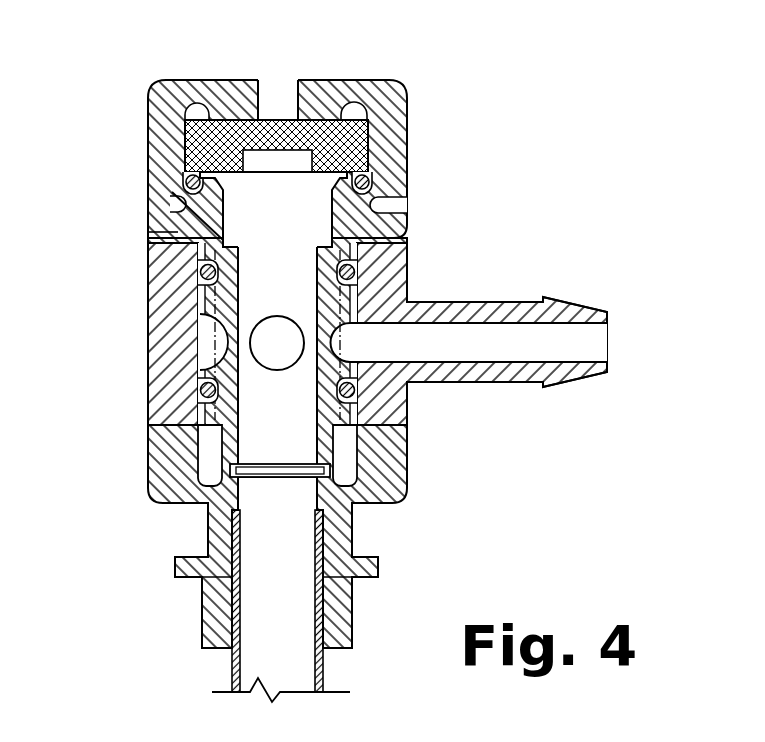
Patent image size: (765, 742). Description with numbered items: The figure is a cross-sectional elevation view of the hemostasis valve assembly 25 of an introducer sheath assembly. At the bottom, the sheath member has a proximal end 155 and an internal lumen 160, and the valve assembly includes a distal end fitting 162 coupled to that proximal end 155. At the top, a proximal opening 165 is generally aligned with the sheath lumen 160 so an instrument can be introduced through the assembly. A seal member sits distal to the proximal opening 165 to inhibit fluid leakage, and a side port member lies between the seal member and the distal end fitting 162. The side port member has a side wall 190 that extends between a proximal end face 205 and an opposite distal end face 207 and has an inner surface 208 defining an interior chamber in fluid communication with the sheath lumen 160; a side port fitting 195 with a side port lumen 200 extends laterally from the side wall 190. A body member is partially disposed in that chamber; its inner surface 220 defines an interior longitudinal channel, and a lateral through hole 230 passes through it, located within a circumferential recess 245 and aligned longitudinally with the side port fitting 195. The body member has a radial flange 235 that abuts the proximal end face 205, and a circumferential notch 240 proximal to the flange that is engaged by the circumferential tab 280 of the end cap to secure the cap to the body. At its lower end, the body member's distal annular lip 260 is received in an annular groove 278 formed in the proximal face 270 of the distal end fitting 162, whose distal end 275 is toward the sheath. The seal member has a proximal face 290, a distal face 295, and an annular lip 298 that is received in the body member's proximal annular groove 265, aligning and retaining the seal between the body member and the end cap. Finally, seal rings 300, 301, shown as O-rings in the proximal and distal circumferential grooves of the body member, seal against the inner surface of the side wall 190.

The hemostasis valve assembly 25 is at (503, 207).
The proximal end 155 is at (235, 598).
The internal lumen 160 is at (297, 607).
The distal end fitting 162 is at (202, 635).
The proximal opening 165 is at (287, 85).
The side wall 190 is at (158, 328).
The side port fitting 195 is at (578, 303).
The side port lumen 200 is at (610, 338).
The proximal end face 205 is at (408, 252).
The distal end face 207 is at (408, 443).
The inner surface 208 is at (197, 347).
The inner surface 220 is at (222, 234).
The lateral through hole 230 is at (278, 357).
The radial flange 235 is at (410, 230).
The circumferential notch 240 is at (172, 202).
The circumferential recess 245 is at (207, 327).
The distal annular lip 260 is at (343, 478).
The proximal annular groove 265 is at (188, 176).
The proximal face 270 is at (407, 412).
The distal end 275 is at (352, 640).
The annular groove 278 is at (207, 507).
The circumferential tab 280 is at (406, 207).
The proximal face 290 is at (198, 103).
The distal face 295 is at (227, 165).
The annular lip 298 is at (374, 176).
The seal ring 300 is at (356, 272).
The seal ring 301 is at (200, 390).